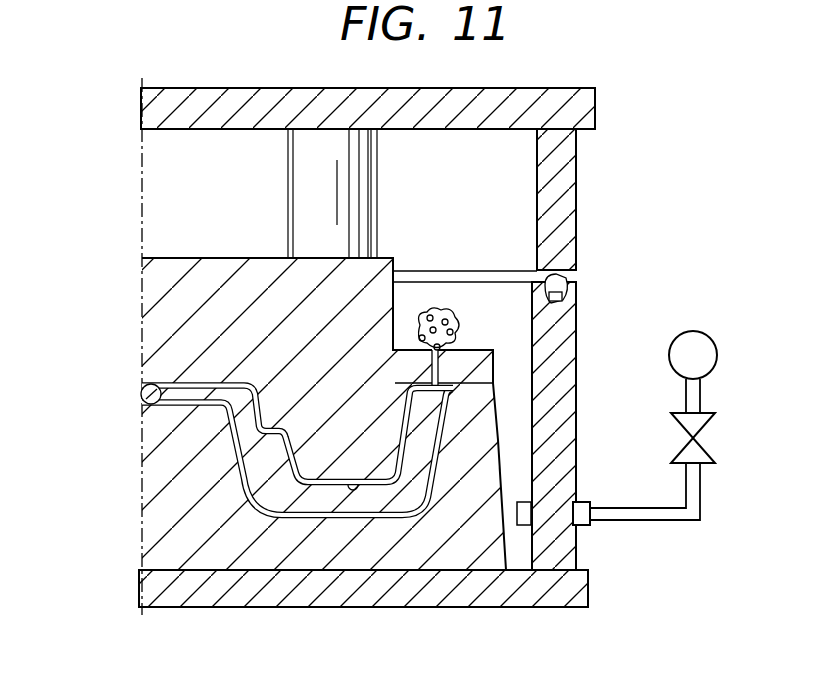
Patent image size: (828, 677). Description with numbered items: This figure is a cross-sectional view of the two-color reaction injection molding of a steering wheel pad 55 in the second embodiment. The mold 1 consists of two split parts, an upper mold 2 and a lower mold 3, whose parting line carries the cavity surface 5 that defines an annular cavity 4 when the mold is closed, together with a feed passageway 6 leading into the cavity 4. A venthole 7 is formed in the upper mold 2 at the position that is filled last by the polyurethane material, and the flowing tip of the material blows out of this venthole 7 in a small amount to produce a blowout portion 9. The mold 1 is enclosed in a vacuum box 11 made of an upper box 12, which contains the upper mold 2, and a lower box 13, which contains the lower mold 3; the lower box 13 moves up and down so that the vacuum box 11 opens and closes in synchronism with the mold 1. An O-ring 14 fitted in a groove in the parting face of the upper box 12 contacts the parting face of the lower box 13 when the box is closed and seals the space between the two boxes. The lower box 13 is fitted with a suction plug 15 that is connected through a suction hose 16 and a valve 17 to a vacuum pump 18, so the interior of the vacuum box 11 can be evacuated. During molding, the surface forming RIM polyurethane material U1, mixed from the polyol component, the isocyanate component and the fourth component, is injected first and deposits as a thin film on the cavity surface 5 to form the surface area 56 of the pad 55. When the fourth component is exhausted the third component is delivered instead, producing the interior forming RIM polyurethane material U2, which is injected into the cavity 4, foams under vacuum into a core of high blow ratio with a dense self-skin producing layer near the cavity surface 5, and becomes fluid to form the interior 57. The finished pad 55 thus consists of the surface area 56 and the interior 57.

The mold 1 is at (121, 259).
The upper mold 2 is at (152, 305).
The lower mold 3 is at (155, 449).
The cavity 4 is at (307, 483).
The cavity surface 5 is at (354, 481).
The feed passageway 6 is at (150, 394).
The venthole 7 is at (424, 372).
The blowout portion 9 is at (438, 313).
The vacuum box 11 is at (591, 178).
The upper box 12 is at (570, 215).
The lower box 13 is at (568, 362).
The O-ring 14 is at (572, 290).
The suction plug 15 is at (581, 507).
The suction hose 16 is at (657, 515).
The valve 17 is at (673, 425).
The vacuum pump 18 is at (672, 338).
The pad 55 is at (296, 532).
The surface area 56 is at (331, 521).
The interior 57 is at (378, 504).
The surface forming RIM polyurethane material U1 is at (245, 483).
The interior forming RIM polyurethane material U2 is at (267, 494).